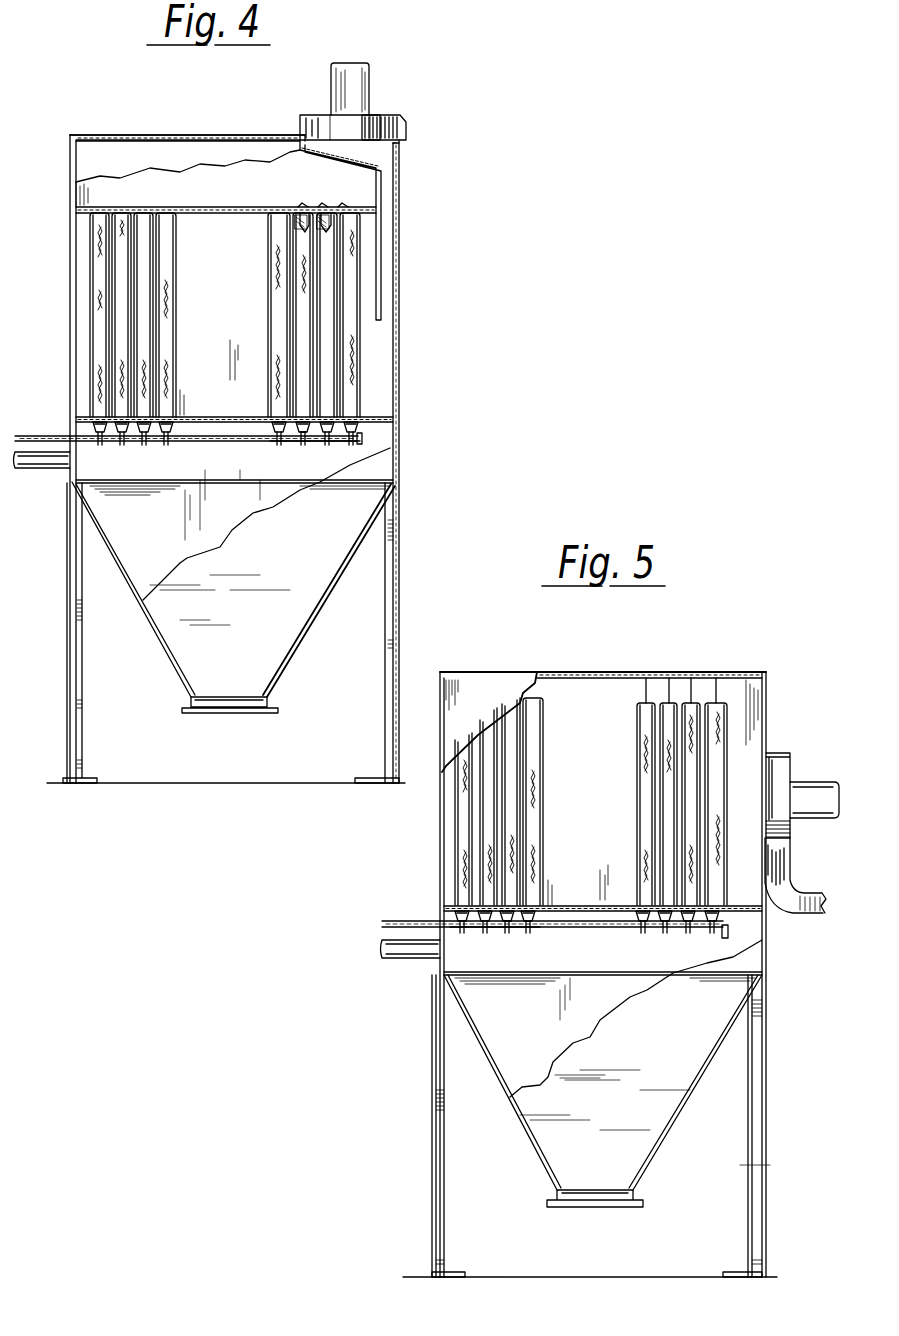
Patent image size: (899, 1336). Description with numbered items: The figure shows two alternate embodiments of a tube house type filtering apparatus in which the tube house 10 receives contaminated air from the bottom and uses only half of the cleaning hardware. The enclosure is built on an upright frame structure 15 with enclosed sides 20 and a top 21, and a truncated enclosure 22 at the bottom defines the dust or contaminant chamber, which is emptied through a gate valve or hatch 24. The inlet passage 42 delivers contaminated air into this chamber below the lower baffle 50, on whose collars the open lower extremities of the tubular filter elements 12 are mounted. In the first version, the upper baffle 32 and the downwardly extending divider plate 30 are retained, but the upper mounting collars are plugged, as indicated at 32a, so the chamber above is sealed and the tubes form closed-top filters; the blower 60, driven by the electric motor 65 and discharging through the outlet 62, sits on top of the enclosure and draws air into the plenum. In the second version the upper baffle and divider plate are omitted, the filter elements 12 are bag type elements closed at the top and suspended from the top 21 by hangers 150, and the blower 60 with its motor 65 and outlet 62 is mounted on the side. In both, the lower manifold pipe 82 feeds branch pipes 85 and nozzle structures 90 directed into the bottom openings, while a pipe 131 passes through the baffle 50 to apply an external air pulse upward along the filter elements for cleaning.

In FIG. 4, the tube house 10 is at (468, 273).
In FIG. 5, the tube house 10 is at (754, 655).
In FIG. 4, the tubular filter elements 12 is at (355, 332).
In FIG. 5, the tubular filter elements 12 is at (635, 812).
In FIG. 4, the upright frame structure 15 is at (396, 556).
In FIG. 5, the upright frame structure 15 is at (762, 1060).
In FIG. 4, the enclosed sides 20 is at (378, 268).
In FIG. 5, the enclosed sides 20 is at (440, 858).
In FIG. 4, the top 21 is at (140, 135).
In FIG. 5, the top 21 is at (572, 672).
In FIG. 4, the truncated enclosure 22 is at (308, 640).
In FIG. 5, the truncated enclosure 22 is at (672, 1142).
In FIG. 4, the gate valve or hatch 24 is at (258, 713).
In FIG. 5, the gate valve or hatch 24 is at (632, 1207).
In FIG. 4, the divider plate 30 is at (400, 190).
In FIG. 4, the upper baffle 32 is at (222, 207).
In FIG. 4, the plugged mounting collars 32a is at (305, 210).
In FIG. 4, the inlet passage 42 is at (58, 470).
In FIG. 5, the inlet passage 42 is at (410, 962).
In FIG. 4, the lower baffle 50 is at (385, 420).
In FIG. 5, the lower baffle 50 is at (740, 912).
In FIG. 4, the blower 60 is at (325, 122).
In FIG. 5, the blower 60 is at (782, 753).
In FIG. 4, the outlet 62 is at (398, 118).
In FIG. 5, the outlet 62 is at (788, 890).
In FIG. 4, the electric motor 65 is at (358, 63).
In FIG. 5, the electric motor 65 is at (830, 782).
In FIG. 4, the lower manifold pipe 82 is at (58, 436).
In FIG. 5, the lower manifold pipe 82 is at (410, 921).
In FIG. 4, the branch pipes 85 is at (98, 440).
In FIG. 5, the branch pipes 85 is at (502, 928).
In FIG. 4, the nozzle structures 90 is at (298, 443).
In FIG. 5, the nozzle structures 90 is at (528, 932).
In FIG. 4, the pipe 131 is at (145, 440).
In FIG. 5, the pipe 131 is at (485, 930).
In FIG. 5, the hangers 150 is at (713, 700).